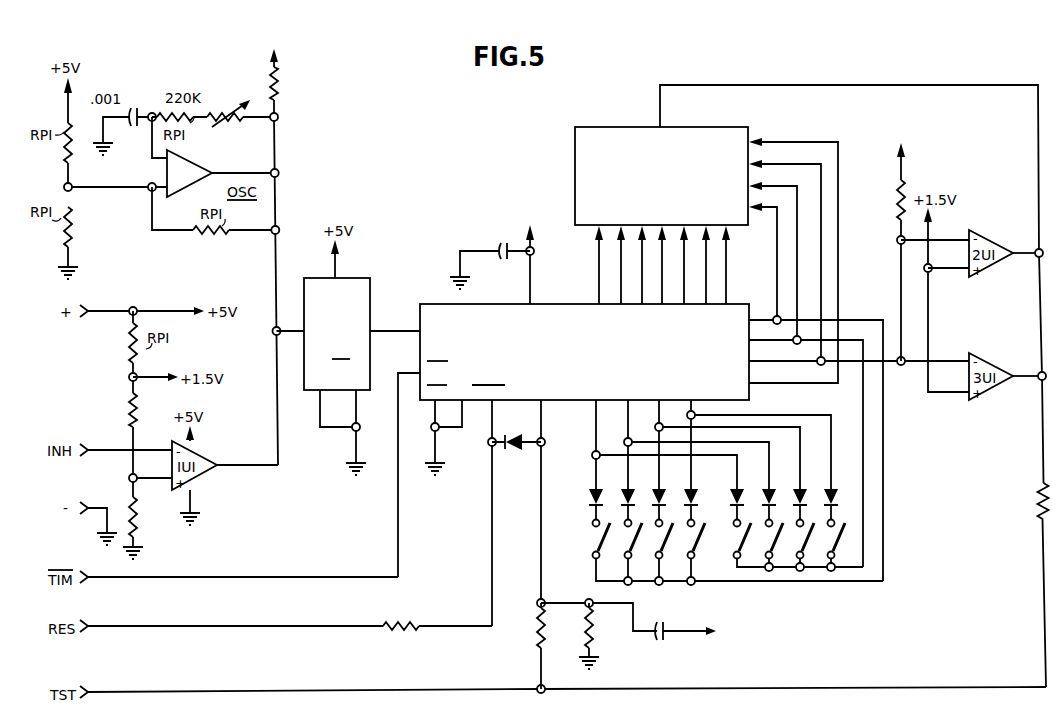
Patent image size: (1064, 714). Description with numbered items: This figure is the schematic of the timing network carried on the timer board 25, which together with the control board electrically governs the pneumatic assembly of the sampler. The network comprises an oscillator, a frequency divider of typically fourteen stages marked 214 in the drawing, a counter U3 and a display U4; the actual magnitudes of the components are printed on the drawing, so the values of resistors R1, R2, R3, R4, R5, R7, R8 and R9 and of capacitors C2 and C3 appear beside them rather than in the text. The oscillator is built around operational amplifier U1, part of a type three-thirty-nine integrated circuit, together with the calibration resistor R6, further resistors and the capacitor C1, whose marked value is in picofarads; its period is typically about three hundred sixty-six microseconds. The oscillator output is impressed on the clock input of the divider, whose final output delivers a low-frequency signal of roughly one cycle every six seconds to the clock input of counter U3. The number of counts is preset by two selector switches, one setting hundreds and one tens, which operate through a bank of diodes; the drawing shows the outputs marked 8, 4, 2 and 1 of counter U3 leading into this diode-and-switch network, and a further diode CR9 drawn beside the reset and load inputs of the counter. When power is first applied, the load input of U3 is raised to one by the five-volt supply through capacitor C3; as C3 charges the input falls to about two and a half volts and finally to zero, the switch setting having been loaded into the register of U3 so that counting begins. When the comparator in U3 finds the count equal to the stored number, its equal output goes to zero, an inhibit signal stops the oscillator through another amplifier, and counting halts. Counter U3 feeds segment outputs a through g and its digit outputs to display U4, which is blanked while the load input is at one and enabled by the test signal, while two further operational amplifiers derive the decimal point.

The binary counter U2 214 is at (379, 271).
The timer board 25 is at (727, 507).
The output pin 8 of U3 8 is at (663, 434).
The output pin 4 of U3 4 is at (694, 434).
The output pin 2 of U3 2 is at (726, 434).
The output pin 1 of U3 1 is at (759, 434).
The operational amplifier U1 is at (182, 157).
The counter U3 is at (592, 358).
The display U4 is at (675, 178).
The resistor R1 is at (147, 412).
The resistor R2 is at (155, 506).
The resistor R3 is at (892, 182).
The resistor R4 is at (410, 611).
The resistor R5 is at (1036, 500).
The calibration resistor R6 is at (231, 122).
The resistor R7 is at (276, 93).
The resistor R8 is at (530, 619).
The resistor R9 is at (597, 627).
The capacitor C1 is at (122, 131).
The capacitor C2 is at (492, 263).
The capacitor C3 is at (668, 613).
The diode CR9 is at (525, 438).